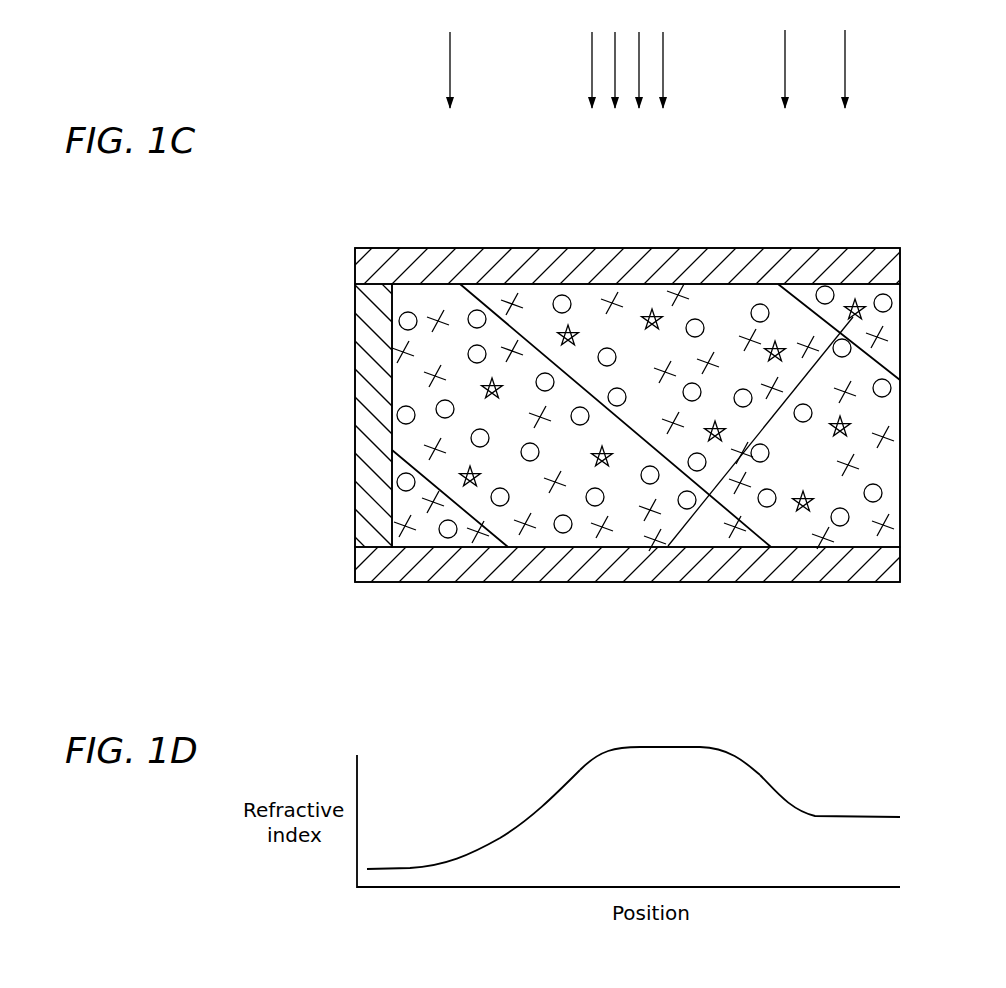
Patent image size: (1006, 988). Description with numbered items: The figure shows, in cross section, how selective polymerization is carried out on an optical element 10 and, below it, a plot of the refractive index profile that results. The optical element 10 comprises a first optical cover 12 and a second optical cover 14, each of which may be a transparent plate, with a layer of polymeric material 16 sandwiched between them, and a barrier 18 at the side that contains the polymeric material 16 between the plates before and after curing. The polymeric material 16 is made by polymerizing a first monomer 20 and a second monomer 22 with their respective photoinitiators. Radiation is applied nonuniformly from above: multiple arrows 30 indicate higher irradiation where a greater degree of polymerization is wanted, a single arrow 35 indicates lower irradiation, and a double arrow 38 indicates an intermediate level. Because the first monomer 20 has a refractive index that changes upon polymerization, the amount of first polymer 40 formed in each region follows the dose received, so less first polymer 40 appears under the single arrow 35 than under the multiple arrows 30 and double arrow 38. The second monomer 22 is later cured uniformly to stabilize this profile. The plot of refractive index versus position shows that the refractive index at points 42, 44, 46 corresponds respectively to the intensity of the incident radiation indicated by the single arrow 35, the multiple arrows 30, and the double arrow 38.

In FIG. 1C, the optical element 10 is at (272, 408).
In FIG. 1C, the first optical cover 12 is at (580, 248).
In FIG. 1C, the second optical cover 14 is at (380, 568).
In FIG. 1C, the polymeric material 16 is at (890, 452).
In FIG. 1C, the barrier 18 is at (365, 323).
In FIG. 1C, the first monomer 20 is at (808, 343).
In FIG. 1C, the second monomer 22 is at (475, 345).
In FIG. 1C, the multiple arrows 30 is at (664, 53).
In FIG. 1C, the single arrow 35 is at (449, 55).
In FIG. 1C, the double arrow 38 is at (785, 46).
In FIG. 1C, the first polymer 40 is at (713, 440).
In FIG. 1D, the refractive index profile point 42 is at (407, 862).
In FIG. 1D, the refractive index profile point 44 is at (665, 740).
In FIG. 1D, the refractive index profile point 46 is at (860, 810).